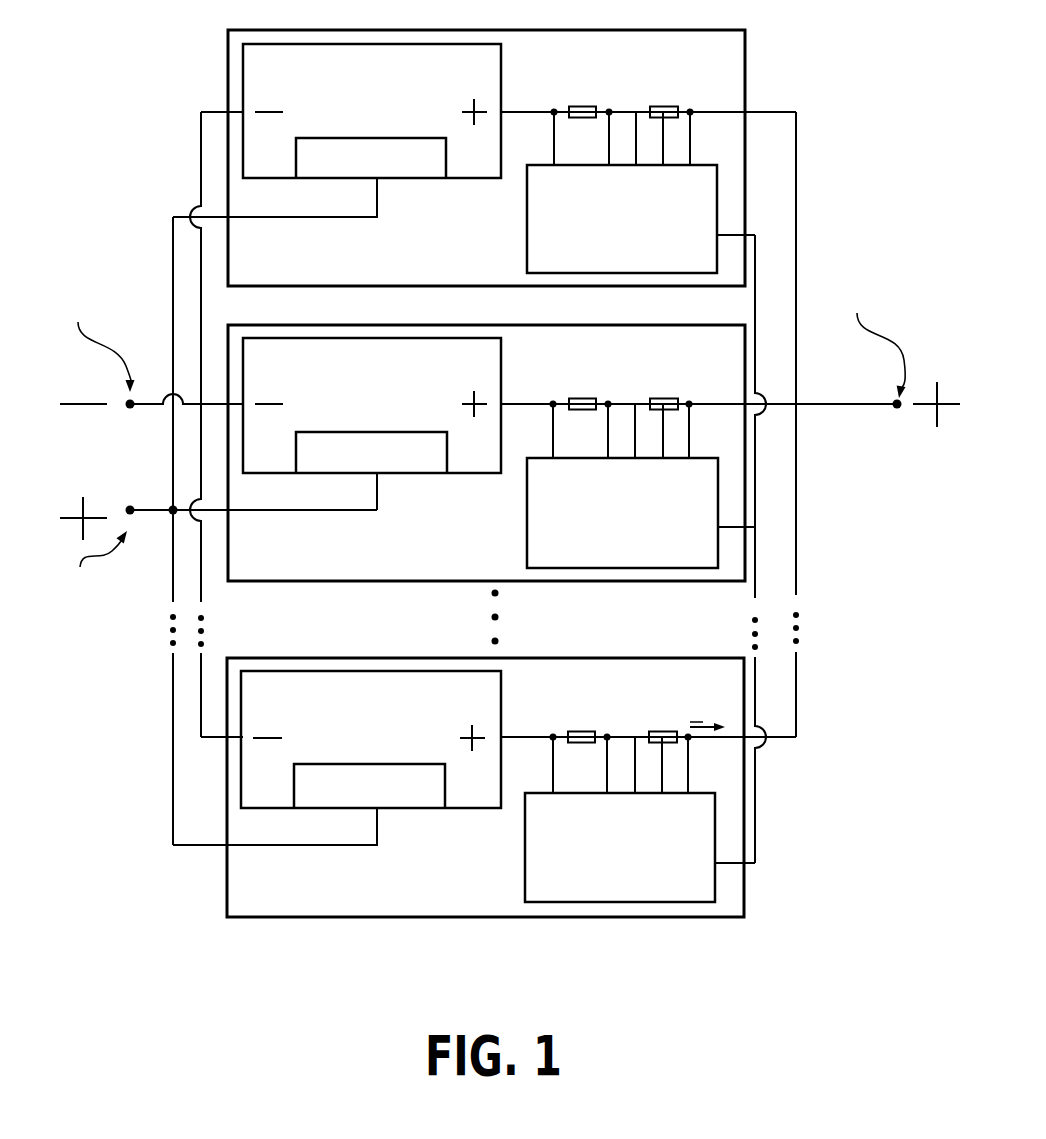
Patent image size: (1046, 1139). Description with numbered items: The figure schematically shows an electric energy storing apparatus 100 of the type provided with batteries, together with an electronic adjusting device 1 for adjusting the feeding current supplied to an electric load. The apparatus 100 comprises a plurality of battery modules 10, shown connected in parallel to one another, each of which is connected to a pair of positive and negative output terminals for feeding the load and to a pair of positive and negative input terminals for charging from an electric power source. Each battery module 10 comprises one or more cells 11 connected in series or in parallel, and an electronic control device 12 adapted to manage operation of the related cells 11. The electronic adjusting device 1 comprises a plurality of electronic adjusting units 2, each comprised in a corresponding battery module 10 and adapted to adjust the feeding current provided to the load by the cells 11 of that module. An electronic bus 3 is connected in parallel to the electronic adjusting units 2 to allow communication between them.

The electric energy storing apparatus 100 is at (501, 435).
The electronic adjusting device 1 is at (723, 487).
The electronic adjusting unit 2 is at (663, 94).
The electronic bus 3 is at (694, 506).
The battery module 10 is at (265, 272).
The cell 11 is at (368, 101).
The electronic control device 12 is at (373, 167).